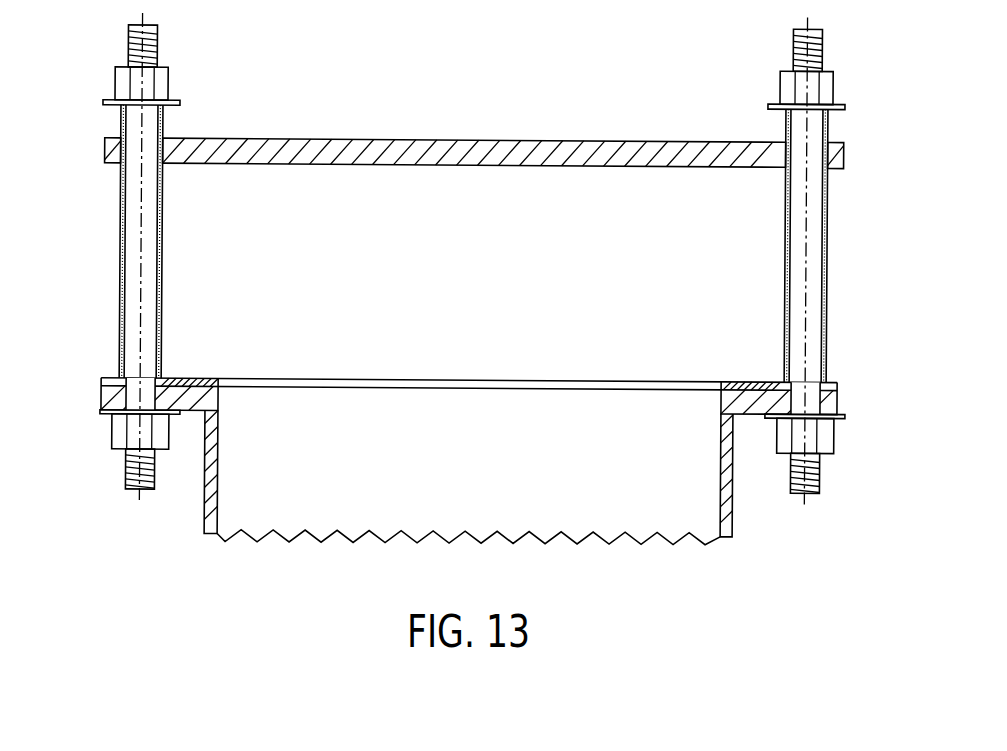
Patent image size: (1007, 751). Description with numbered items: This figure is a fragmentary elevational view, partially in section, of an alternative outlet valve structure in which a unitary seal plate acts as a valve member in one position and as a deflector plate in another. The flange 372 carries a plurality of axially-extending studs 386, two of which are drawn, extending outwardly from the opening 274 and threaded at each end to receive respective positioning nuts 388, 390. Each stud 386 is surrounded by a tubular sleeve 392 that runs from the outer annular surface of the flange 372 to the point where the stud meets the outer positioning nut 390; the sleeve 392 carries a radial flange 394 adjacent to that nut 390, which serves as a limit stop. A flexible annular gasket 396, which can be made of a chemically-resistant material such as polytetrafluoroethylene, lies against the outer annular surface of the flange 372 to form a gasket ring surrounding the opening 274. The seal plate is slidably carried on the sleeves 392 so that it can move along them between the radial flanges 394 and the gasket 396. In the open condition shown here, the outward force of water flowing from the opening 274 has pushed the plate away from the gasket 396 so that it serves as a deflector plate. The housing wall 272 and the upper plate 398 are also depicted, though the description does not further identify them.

The housing wall 272 is at (723, 487).
The opening 274 is at (217, 398).
The flange 372 is at (828, 400).
The studs 386 is at (133, 280).
The positioning nut 388 is at (118, 437).
The positioning nut 390 is at (168, 77).
The tubular sleeve 392 is at (163, 222).
The radial flange 394 is at (110, 107).
The flexible annular gasket 396 is at (750, 381).
The upper plate 398 is at (387, 140).